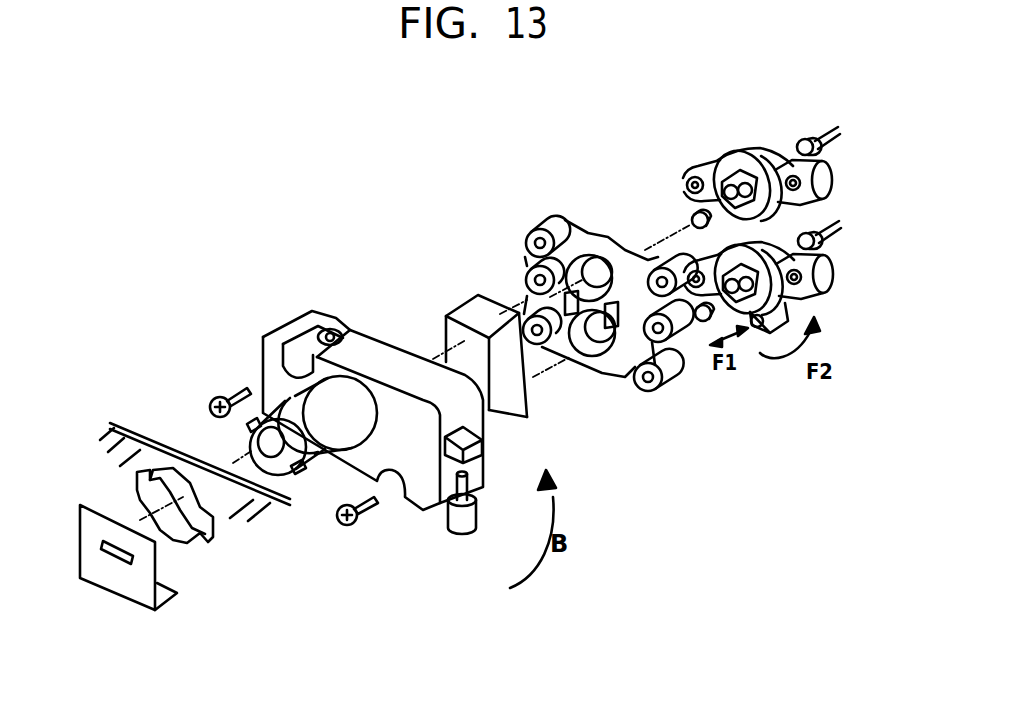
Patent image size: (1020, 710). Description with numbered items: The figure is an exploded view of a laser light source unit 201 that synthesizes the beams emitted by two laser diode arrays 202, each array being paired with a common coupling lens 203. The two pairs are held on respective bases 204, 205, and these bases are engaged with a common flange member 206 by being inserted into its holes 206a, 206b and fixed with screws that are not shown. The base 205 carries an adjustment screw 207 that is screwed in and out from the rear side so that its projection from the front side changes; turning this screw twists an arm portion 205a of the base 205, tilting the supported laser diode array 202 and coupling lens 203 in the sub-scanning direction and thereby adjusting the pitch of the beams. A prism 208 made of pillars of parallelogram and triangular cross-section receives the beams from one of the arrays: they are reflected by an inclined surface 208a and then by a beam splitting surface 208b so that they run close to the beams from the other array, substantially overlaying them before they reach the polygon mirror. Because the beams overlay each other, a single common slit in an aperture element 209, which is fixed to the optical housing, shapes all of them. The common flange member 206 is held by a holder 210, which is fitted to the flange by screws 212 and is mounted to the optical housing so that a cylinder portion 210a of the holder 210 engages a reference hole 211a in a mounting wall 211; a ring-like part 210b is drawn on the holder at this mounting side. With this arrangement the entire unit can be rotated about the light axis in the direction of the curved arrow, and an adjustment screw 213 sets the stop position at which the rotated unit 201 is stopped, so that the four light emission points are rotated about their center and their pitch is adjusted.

The laser light source unit 201 is at (257, 238).
The laser diode array 202 is at (838, 220).
The coupling lens 203 is at (698, 213).
The base 204 is at (757, 148).
The base 205 is at (830, 262).
The arm portion 205a is at (806, 300).
The common flange member 206 is at (528, 226).
The hole 206a is at (584, 282).
The hole 206b is at (584, 345).
The adjustment screw 207 is at (754, 328).
The prism 208 is at (452, 312).
The inclined surface 208a is at (514, 410).
The beam splitting surface 208b is at (503, 338).
The aperture element 209 is at (157, 570).
The holder 210 is at (400, 362).
The cylinder portion 210a is at (343, 388).
The lens ring 210b is at (250, 422).
The mounting wall 211 is at (110, 423).
The reference hole 211a is at (137, 480).
The screws 212 is at (232, 396).
The adjustment screw 213 is at (470, 535).